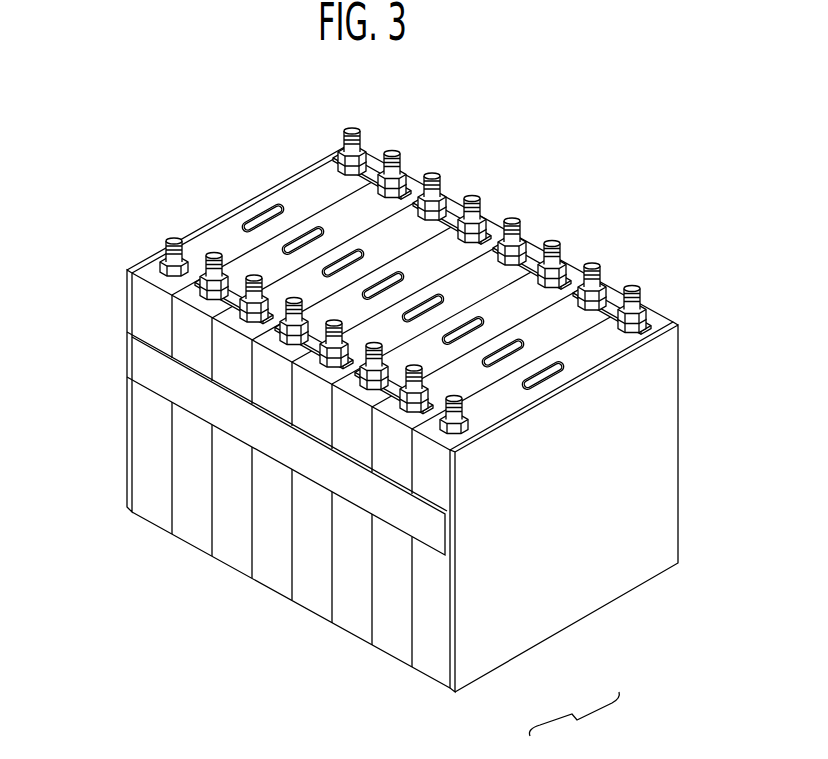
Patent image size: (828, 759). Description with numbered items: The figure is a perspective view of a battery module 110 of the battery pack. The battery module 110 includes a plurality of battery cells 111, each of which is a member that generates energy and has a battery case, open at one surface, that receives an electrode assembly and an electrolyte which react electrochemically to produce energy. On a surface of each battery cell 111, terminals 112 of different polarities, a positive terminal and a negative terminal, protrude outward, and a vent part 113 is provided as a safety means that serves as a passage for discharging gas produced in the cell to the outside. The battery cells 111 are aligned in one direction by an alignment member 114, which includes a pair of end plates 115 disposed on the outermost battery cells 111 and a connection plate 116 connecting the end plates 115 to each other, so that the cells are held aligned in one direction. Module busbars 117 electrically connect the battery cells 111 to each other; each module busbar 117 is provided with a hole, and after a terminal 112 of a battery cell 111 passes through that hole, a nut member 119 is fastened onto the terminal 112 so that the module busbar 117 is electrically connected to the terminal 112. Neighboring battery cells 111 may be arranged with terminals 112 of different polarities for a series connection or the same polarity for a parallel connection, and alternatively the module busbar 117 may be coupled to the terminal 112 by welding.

The battery module 110 is at (513, 172).
The battery cell 111 is at (195, 480).
The terminal 112 is at (356, 131).
The vent part 113 is at (270, 213).
The alignment member 114 is at (574, 722).
The end plate 115 is at (578, 603).
The connection plate 116 is at (433, 530).
The module busbar 117 is at (610, 300).
The nut member 119 is at (560, 260).